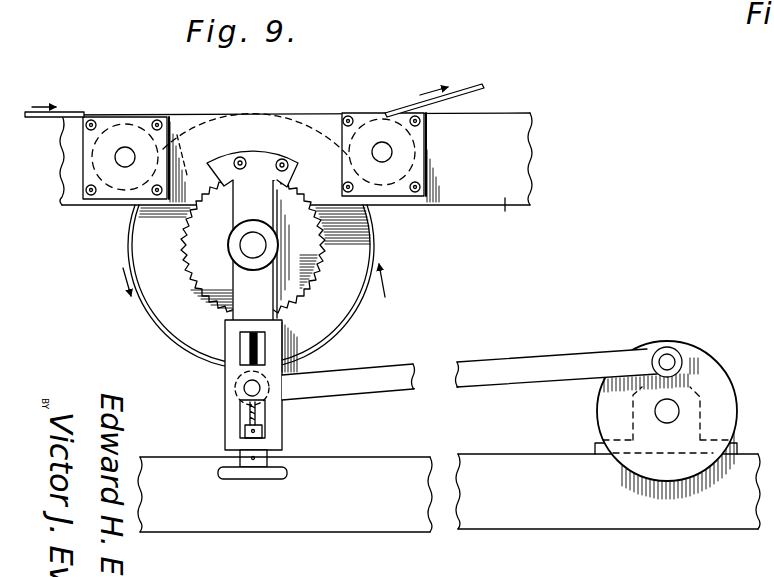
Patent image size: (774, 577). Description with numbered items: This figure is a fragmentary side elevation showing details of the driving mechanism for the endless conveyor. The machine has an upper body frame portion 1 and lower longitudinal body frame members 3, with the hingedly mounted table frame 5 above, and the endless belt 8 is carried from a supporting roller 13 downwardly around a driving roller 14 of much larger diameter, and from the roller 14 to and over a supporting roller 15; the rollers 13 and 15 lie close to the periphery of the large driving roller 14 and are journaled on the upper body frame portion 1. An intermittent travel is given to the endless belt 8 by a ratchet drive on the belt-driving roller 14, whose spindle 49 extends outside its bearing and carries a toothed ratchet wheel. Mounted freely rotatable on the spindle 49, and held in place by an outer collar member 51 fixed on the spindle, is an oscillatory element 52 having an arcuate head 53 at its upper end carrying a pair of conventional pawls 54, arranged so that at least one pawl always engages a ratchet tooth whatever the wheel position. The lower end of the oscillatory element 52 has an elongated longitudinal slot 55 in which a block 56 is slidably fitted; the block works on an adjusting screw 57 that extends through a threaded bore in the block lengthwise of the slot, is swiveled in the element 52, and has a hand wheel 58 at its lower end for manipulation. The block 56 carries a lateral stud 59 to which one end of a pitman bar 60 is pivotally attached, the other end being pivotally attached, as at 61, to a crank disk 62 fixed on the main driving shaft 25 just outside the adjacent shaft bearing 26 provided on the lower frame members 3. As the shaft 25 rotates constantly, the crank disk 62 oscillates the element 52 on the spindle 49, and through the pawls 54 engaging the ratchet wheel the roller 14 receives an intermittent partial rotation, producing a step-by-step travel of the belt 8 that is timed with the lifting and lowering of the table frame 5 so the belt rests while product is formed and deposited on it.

The upper body frame portion 1 is at (502, 214).
The lower longitudinal body frame members 3 is at (468, 522).
The table frame 5 is at (520, 157).
The endless belt 8 is at (470, 86).
The supporting roller 13 is at (85, 157).
The driving roller 14 is at (166, 314).
The supporting roller 15 is at (424, 152).
The main driving shaft 25 is at (680, 411).
The bearings 26 is at (597, 446).
The spindle 49 is at (245, 244).
The collar member 51 is at (278, 245).
The oscillatory element 52 is at (265, 293).
The arcuate head 53 is at (248, 152).
The pawls 54 is at (215, 158).
The elongated longitudinal slot 55 is at (243, 343).
The block 56 is at (245, 403).
The adjusting screw 57 is at (256, 354).
The hand wheel 58 is at (252, 480).
The lateral stud 59 is at (261, 395).
The pitman bar 60 is at (460, 365).
The pivotal attachment 61 is at (664, 346).
The crank disk 62 is at (720, 376).